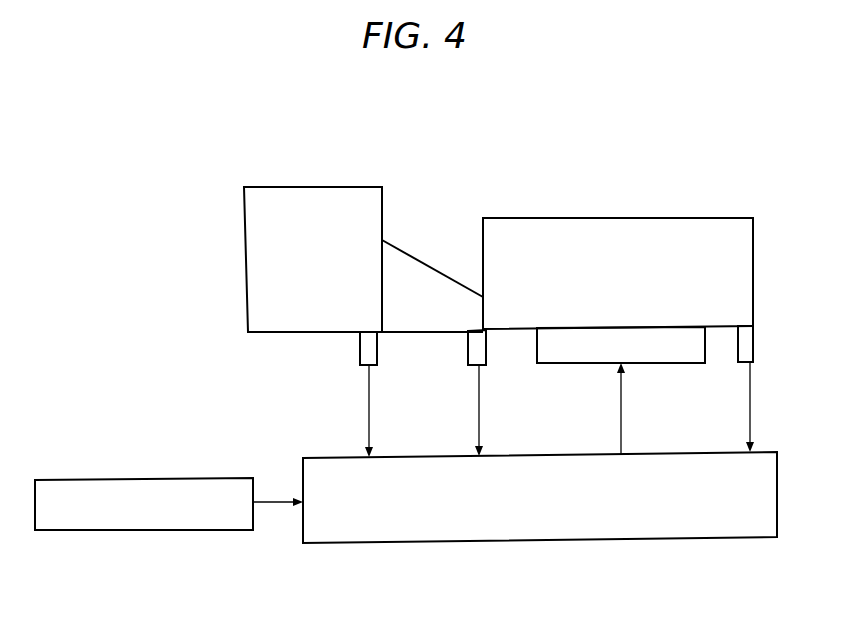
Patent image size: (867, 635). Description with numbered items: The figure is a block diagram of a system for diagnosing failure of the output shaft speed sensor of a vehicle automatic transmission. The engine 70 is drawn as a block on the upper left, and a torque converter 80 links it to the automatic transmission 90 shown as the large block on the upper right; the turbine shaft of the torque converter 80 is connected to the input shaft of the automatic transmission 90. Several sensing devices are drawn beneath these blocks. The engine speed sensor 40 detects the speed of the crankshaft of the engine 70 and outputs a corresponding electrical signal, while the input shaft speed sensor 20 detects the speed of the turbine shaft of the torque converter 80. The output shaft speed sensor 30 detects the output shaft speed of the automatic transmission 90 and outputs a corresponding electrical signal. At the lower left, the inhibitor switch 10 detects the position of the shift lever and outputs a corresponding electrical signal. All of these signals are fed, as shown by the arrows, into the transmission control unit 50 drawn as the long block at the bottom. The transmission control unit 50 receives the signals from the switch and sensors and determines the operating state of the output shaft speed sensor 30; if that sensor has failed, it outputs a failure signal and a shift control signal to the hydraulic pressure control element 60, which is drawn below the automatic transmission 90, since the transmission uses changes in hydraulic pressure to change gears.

The inhibitor switch 10 is at (145, 478).
The input shaft speed sensor 20 is at (468, 361).
The output shaft speed sensor 30 is at (754, 358).
The engine speed sensor 40 is at (360, 362).
The transmission control unit 50 is at (777, 493).
The hydraulic pressure control element 60 is at (665, 364).
The engine 70 is at (305, 187).
The torque converter 80 is at (437, 268).
The automatic transmission 90 is at (607, 218).